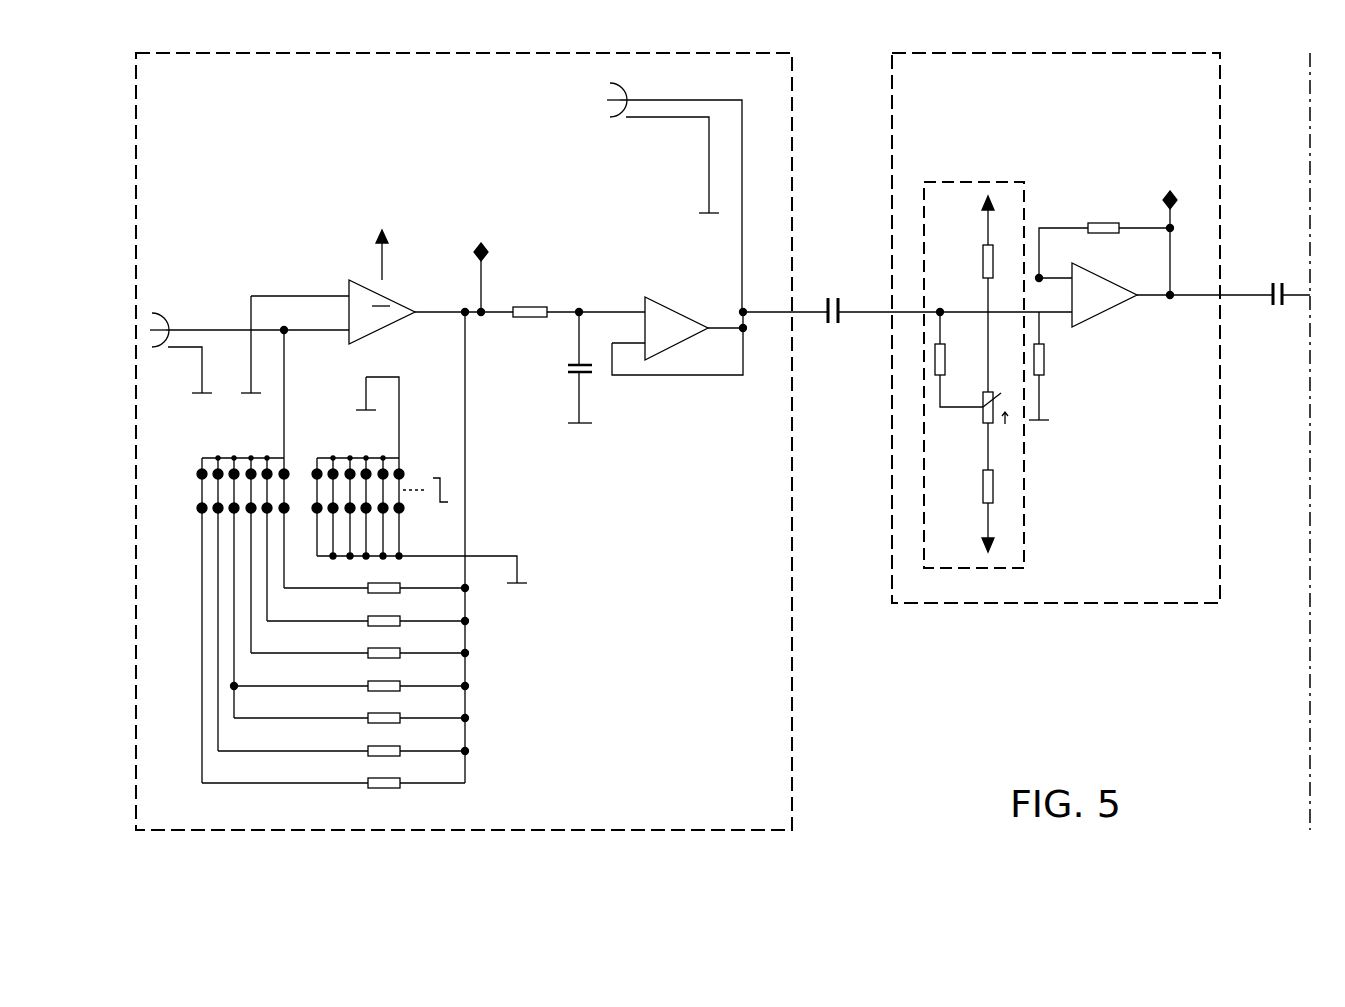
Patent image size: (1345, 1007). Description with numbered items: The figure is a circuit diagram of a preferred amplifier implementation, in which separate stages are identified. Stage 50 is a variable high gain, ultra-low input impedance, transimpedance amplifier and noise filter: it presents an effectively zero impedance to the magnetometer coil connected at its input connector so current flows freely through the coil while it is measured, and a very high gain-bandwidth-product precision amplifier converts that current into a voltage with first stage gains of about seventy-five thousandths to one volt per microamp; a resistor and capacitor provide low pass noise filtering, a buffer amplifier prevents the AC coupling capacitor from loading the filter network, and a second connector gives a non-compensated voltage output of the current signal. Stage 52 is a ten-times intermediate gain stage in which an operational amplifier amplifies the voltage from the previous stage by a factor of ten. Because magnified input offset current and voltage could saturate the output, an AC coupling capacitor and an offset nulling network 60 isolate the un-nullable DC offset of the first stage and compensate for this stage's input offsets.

The stage 50 is at (792, 92).
The stage 52 is at (1051, 328).
The offset nulling network 60 is at (1024, 540).